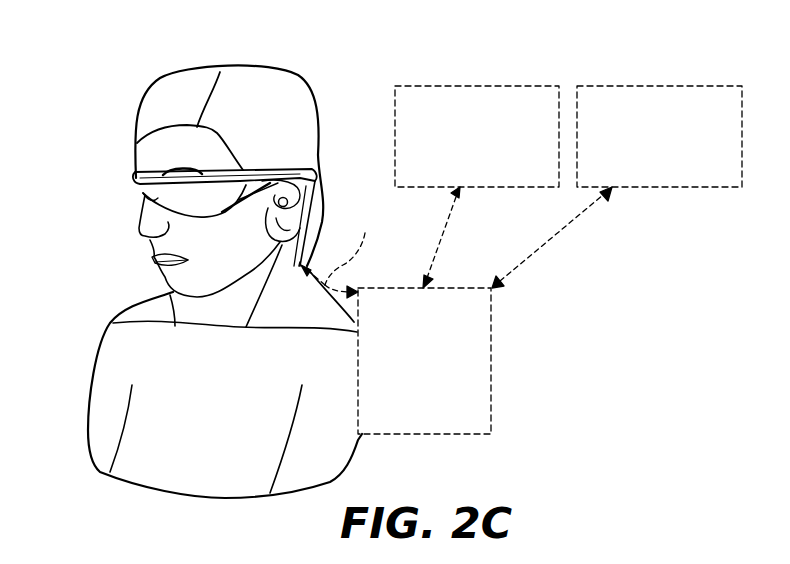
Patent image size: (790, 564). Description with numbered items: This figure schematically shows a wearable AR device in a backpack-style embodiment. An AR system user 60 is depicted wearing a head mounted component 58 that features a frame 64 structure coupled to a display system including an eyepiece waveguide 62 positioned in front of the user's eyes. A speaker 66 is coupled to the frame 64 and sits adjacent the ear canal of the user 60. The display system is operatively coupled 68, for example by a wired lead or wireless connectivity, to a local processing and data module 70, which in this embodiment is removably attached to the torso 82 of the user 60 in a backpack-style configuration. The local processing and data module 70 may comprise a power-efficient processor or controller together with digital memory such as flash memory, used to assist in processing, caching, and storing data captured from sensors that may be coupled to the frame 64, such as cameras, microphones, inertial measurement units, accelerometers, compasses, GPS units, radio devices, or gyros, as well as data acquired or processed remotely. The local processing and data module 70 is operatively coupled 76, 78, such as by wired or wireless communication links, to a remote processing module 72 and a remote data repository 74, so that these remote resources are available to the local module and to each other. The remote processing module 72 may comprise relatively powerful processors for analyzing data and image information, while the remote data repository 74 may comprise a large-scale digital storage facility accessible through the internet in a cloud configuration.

The head mounted component 58 is at (205, 163).
The AR system user 60 is at (170, 95).
The eyepiece waveguide 62 is at (138, 205).
The frame 64 is at (250, 170).
The speaker 66 is at (312, 190).
The operative coupling 68 is at (303, 243).
The local processing and data module 70 is at (492, 360).
The remote processing module 72 is at (478, 85).
The remote data repository 74 is at (660, 85).
The operative coupling 76 is at (445, 234).
The operative coupling 78 is at (553, 237).
The torso 82 is at (358, 362).